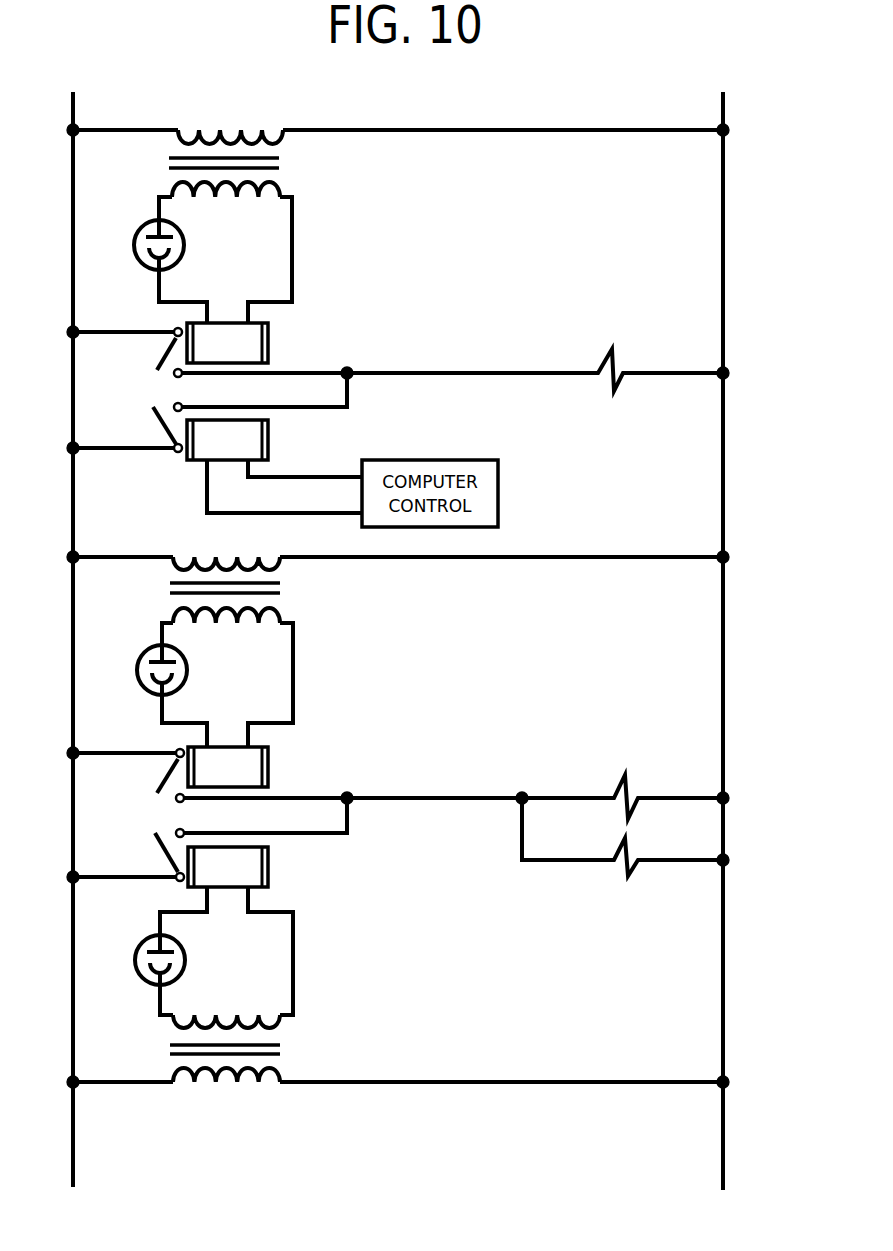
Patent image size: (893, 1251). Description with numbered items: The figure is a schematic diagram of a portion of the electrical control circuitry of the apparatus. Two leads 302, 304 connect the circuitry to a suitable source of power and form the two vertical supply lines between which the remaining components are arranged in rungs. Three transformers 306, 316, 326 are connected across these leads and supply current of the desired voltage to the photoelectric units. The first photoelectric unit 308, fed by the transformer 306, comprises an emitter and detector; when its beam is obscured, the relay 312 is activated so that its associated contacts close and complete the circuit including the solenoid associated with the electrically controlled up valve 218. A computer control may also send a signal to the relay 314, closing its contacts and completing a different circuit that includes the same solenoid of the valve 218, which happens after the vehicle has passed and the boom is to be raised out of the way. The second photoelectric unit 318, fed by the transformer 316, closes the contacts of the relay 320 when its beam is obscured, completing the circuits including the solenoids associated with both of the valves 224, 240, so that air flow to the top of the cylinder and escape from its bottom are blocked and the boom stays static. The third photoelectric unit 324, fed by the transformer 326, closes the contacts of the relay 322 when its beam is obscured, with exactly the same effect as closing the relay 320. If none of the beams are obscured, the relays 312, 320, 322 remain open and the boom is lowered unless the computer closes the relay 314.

The lead 302 is at (77, 627).
The lead 304 is at (724, 626).
The transformer 306 is at (398, 213).
The photoelectric unit 308 is at (183, 245).
The relay 312 is at (189, 350).
The relay 314 is at (214, 458).
The electrically controlled up valve 218 is at (455, 366).
The transformer 316 is at (398, 638).
The photoelectric unit 318 is at (183, 670).
The relay 320 is at (190, 774).
The relay 322 is at (190, 922).
The valve 224 is at (456, 791).
The valve 240 is at (625, 849).
The photoelectric unit 324 is at (183, 960).
The transformer 326 is at (398, 1046).